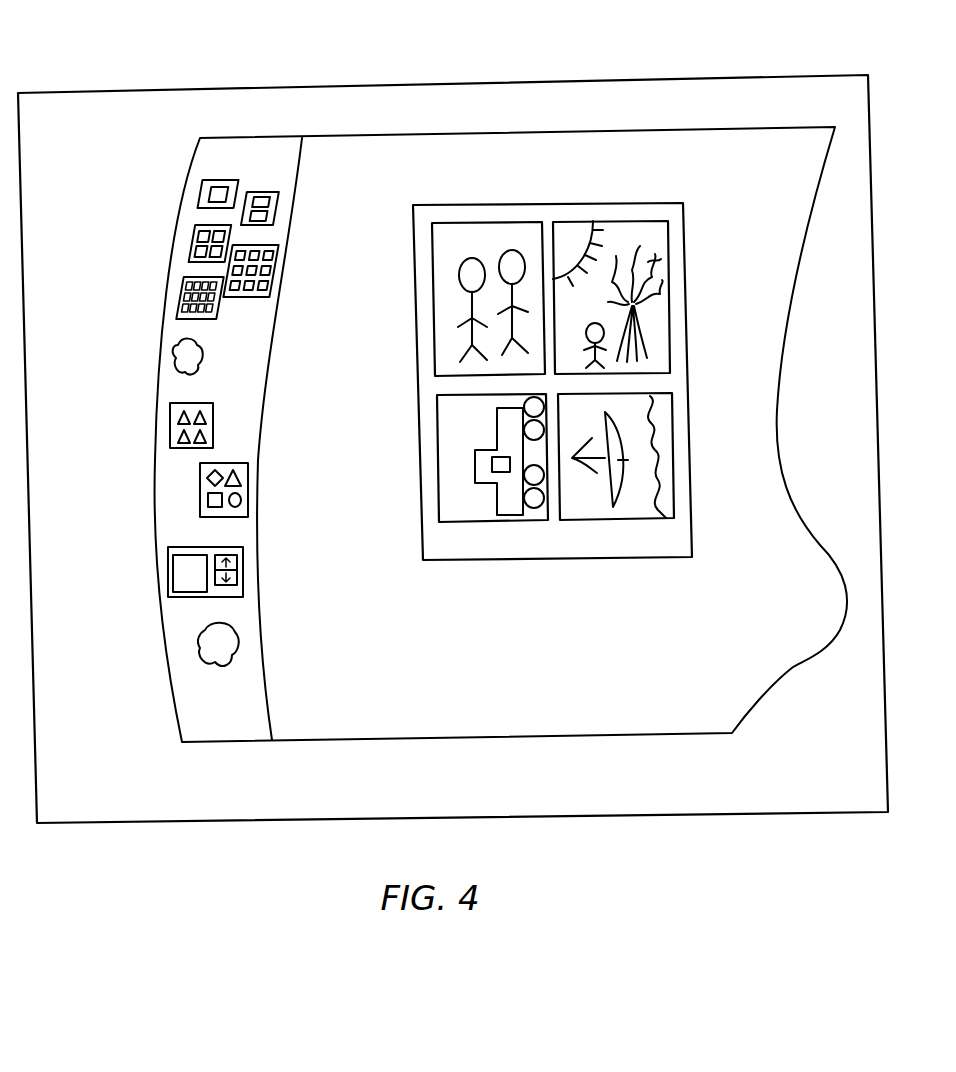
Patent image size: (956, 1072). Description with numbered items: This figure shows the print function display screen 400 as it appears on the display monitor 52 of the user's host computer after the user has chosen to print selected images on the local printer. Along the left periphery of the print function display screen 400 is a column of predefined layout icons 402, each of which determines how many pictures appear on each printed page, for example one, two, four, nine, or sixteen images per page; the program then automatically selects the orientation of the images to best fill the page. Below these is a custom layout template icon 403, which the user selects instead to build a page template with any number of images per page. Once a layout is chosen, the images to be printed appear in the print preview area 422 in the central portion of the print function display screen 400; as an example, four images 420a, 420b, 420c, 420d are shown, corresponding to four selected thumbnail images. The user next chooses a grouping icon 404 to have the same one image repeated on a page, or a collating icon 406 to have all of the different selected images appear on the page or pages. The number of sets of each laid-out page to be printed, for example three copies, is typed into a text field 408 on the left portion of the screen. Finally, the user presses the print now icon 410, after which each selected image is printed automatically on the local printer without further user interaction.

The display monitor 52 is at (358, 84).
The print function display screen 400 is at (470, 133).
The layout icons 402 is at (211, 182).
The custom layout template icon 403 is at (173, 357).
The grouping icon 404 is at (172, 425).
The collating icon 406 is at (250, 485).
The text field 408 is at (245, 560).
The print now icon 410 is at (198, 655).
The print preview area 422 is at (503, 203).
The image 420a is at (431, 273).
The image 420b is at (643, 205).
The image 420c is at (436, 428).
The image 420d is at (674, 438).